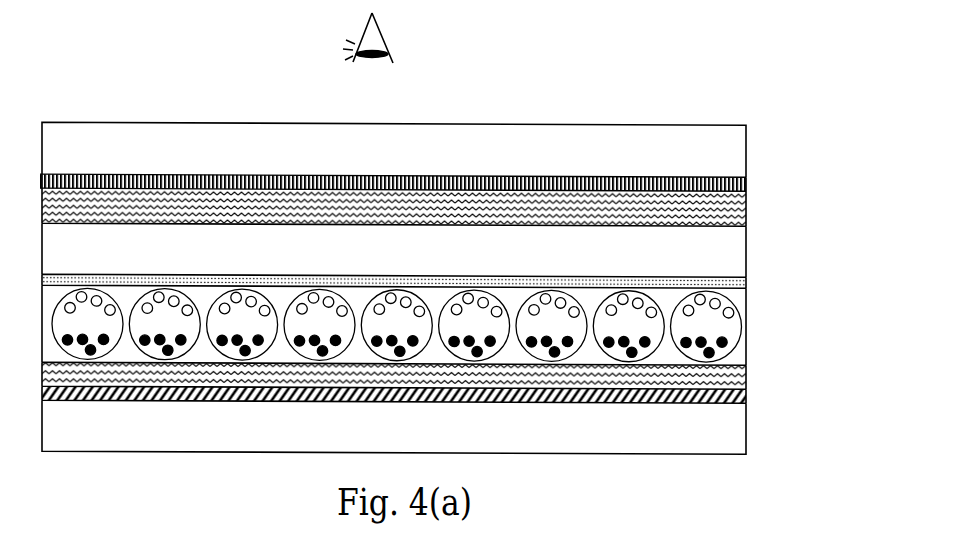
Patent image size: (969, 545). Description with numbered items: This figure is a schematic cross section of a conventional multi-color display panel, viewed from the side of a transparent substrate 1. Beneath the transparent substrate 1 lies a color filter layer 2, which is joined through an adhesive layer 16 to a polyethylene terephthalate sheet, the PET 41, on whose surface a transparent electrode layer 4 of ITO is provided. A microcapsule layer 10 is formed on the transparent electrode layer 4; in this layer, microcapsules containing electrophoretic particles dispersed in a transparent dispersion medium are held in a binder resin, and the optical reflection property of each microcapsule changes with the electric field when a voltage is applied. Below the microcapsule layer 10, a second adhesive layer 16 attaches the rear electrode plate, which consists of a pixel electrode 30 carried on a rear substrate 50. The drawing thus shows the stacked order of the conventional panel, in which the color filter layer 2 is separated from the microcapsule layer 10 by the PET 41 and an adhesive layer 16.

The transparent substrate 1 is at (693, 157).
The color filter layer 2 is at (715, 190).
The adhesive layer 16 is at (708, 212).
The PET 41 is at (708, 263).
The transparent electrode layer 4 is at (720, 285).
The microcapsule layer 10 is at (787, 298).
The pixel electrode 30 is at (745, 402).
The rear substrate 50 is at (708, 435).